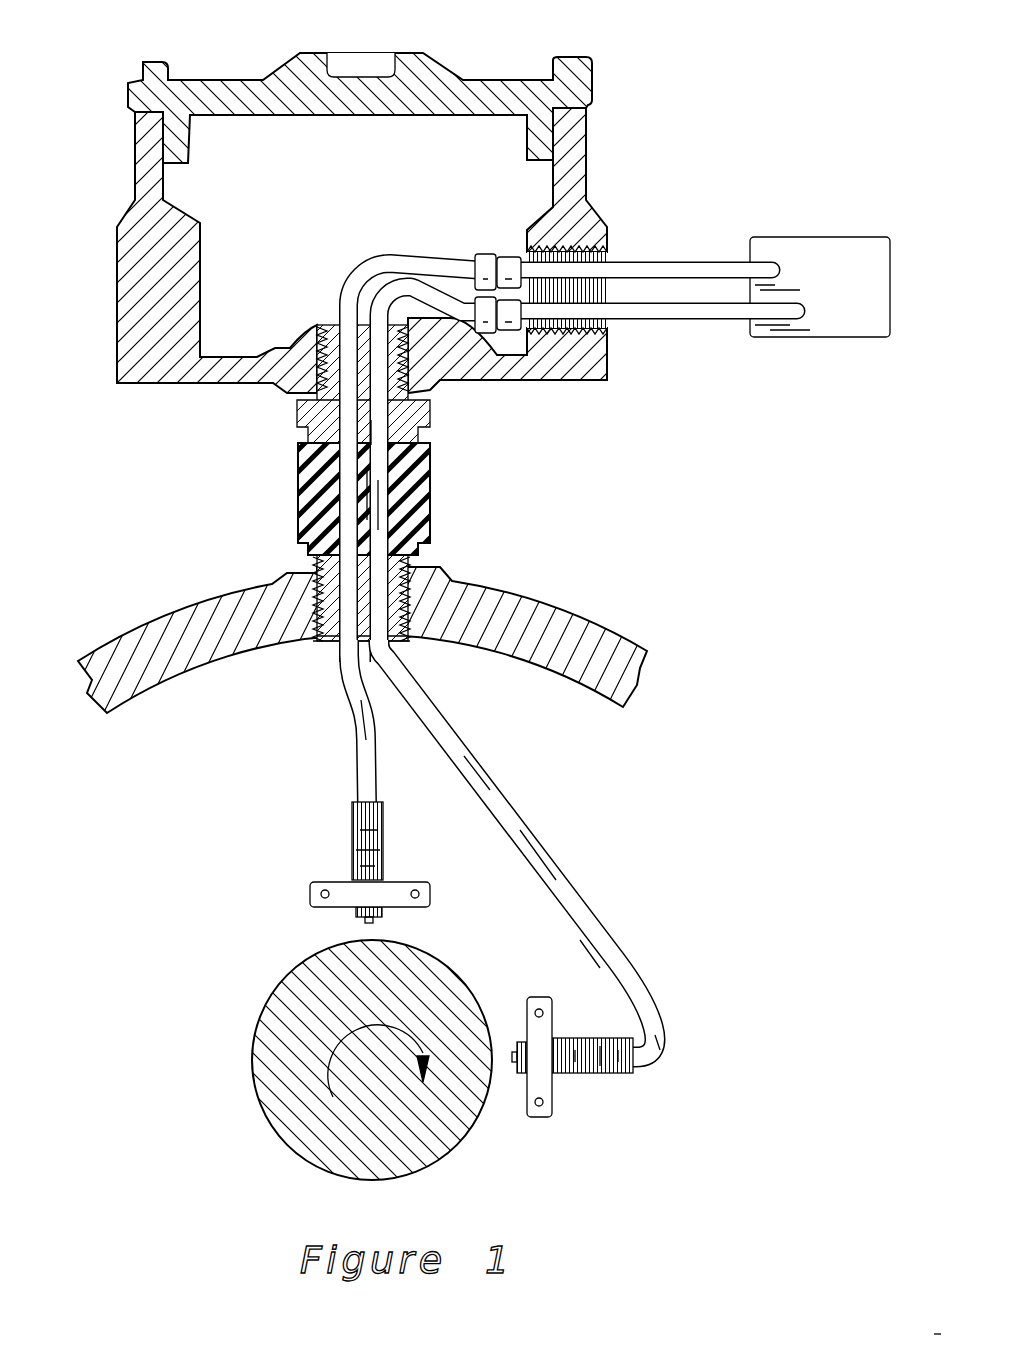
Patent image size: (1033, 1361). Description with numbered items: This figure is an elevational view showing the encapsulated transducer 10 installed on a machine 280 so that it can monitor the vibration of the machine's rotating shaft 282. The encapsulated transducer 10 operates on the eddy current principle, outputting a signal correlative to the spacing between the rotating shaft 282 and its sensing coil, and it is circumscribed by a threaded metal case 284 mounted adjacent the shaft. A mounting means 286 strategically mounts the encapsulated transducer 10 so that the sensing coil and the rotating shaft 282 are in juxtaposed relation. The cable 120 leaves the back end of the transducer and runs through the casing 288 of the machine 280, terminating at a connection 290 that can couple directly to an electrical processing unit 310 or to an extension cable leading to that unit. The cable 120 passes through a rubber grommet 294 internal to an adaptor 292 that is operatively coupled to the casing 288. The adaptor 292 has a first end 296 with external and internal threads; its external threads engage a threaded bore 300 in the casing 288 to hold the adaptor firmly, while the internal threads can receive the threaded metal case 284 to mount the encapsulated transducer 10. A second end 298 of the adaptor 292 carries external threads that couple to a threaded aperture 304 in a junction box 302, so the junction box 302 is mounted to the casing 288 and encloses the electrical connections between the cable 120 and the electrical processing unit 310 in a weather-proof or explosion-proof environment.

The encapsulated transducer 10 is at (490, 980).
The cable 120 is at (348, 694).
The machine 280 is at (424, 623).
The rotating shaft 282 is at (272, 990).
The threaded metal case 284 is at (360, 856).
The mounting means 286 is at (318, 895).
The casing 288 is at (632, 642).
The connection 290 is at (482, 255).
The adaptor 292 is at (478, 413).
The rubber grommet 294 is at (422, 490).
The first end 296 is at (325, 636).
The second end 298 is at (330, 333).
The threaded bore 300 is at (323, 572).
The junction box 302 is at (517, 76).
The threaded aperture 304 is at (330, 402).
The electrical processing unit 310 is at (840, 248).